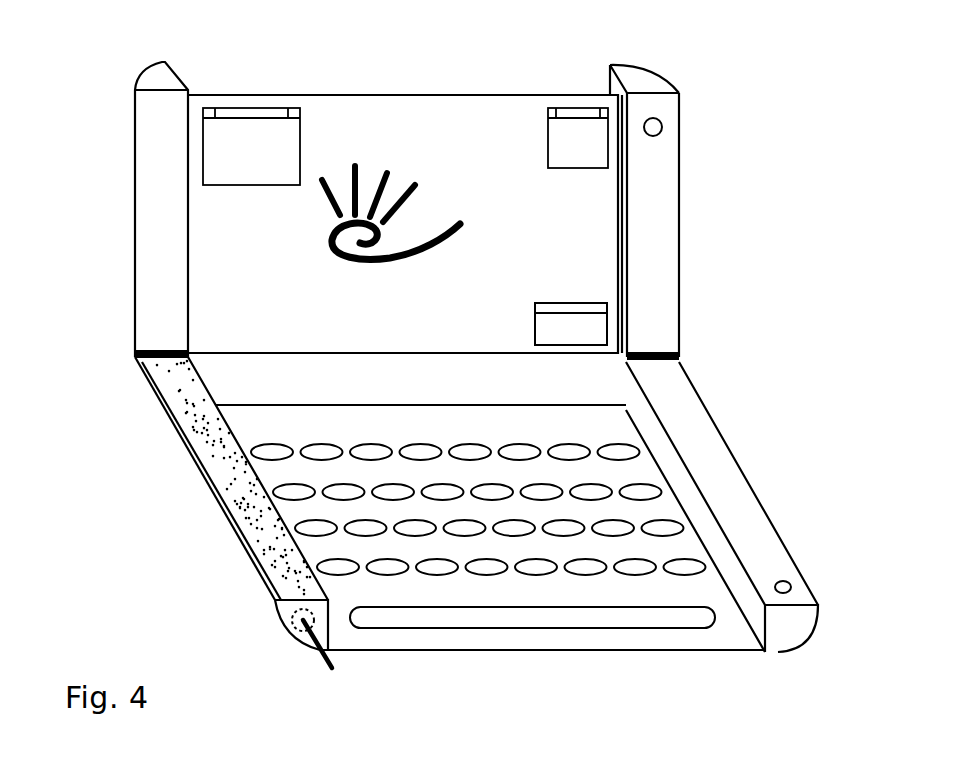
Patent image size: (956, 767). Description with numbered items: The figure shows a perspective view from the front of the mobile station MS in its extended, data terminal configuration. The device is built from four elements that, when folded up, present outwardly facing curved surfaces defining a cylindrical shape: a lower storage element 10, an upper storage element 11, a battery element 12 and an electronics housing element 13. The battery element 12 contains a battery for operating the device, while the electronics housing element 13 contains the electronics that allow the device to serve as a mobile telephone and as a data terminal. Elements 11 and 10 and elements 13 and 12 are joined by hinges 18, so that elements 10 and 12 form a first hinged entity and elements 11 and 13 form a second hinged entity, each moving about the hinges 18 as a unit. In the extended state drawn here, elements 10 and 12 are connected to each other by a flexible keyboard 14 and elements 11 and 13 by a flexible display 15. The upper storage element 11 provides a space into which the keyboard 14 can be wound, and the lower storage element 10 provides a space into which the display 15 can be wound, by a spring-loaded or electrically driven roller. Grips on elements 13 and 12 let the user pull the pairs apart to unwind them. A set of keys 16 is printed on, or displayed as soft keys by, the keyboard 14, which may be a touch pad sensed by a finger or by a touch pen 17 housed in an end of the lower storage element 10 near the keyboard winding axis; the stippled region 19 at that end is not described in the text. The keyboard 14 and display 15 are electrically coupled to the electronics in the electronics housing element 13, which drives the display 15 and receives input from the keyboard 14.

The lower storage element 10 is at (179, 437).
The upper storage element 11 is at (134, 142).
The battery element 12 is at (683, 369).
The electronics housing element 13 is at (680, 148).
The flexible keyboard 14 is at (517, 653).
The flexible display 15 is at (434, 88).
The keys 16 is at (697, 607).
The touch pen 17 is at (320, 651).
The hinges 18 is at (133, 353).
The stylus holder strip 19 is at (236, 498).
The mobile station MS is at (650, 82).